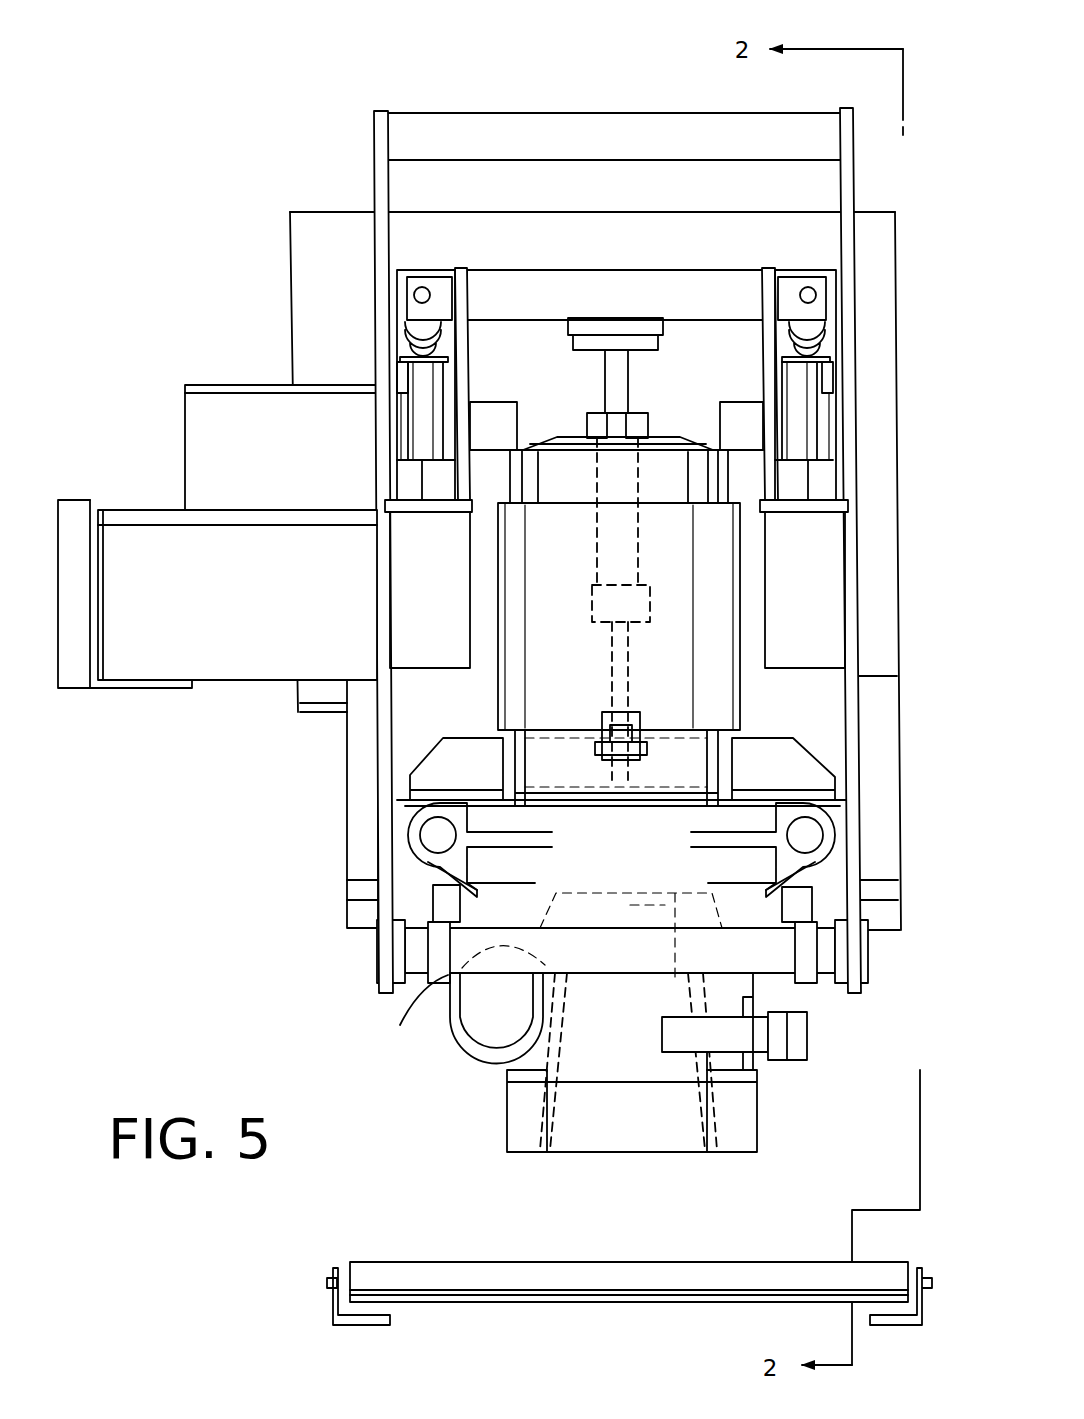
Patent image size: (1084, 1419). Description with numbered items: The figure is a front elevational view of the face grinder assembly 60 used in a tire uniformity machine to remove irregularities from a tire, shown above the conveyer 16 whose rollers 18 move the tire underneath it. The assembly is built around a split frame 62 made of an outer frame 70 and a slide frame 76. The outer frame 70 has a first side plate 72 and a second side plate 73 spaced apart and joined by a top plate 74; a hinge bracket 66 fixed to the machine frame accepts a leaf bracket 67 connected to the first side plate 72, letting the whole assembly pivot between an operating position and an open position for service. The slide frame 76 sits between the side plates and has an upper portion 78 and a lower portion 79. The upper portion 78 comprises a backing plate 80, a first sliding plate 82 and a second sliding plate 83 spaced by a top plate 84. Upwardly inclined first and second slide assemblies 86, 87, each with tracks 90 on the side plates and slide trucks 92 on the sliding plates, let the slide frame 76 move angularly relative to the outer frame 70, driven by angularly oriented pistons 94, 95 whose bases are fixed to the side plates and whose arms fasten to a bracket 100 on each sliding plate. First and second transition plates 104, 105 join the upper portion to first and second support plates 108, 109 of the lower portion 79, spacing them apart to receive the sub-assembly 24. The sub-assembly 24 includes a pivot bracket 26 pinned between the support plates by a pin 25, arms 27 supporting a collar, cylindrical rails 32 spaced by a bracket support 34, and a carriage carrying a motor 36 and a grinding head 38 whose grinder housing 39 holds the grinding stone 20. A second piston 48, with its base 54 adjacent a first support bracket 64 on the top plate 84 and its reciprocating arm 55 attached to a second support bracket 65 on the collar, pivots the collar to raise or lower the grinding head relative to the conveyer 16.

The conveyer 16 is at (455, 1250).
The rollers 18 is at (530, 1268).
The grinding stone 20 is at (643, 1067).
The sub-assembly 24 is at (655, 790).
The pin 25 is at (385, 942).
The pivot bracket 26 is at (440, 960).
The arms 27 is at (440, 907).
The cylindrical rails 32 is at (438, 835).
The bracket support 34 is at (425, 855).
The motor 36 is at (635, 623).
The grinding head 38 is at (614, 1160).
The grinder housing 39 is at (745, 1128).
The second piston 48 is at (598, 556).
The base 54 is at (606, 516).
The reciprocating arm 55 is at (620, 660).
The face grinder assembly 60 is at (315, 890).
The split frame 62 is at (568, 103).
The first support bracket 64 is at (640, 337).
The second support bracket 65 is at (605, 790).
The hinge bracket 66 is at (80, 505).
The leaf bracket 67 is at (140, 525).
The outer frame 70 is at (862, 375).
The first side plate 72 is at (383, 170).
The second side plate 73 is at (847, 196).
The top plate 74 is at (455, 116).
The slide frame 76 is at (378, 768).
The upper portion 78 is at (453, 266).
The lower portion 79 is at (378, 703).
The backing plate 80 is at (716, 345).
The first sliding plate 82 is at (462, 478).
The second sliding plate 83 is at (775, 500).
The top plate 84 is at (533, 283).
The first slide assembly 86 is at (416, 489).
The second slide assembly 87 is at (827, 489).
The tracks 90 is at (400, 415).
The slide trucks 92 is at (435, 462).
The piston 94 is at (406, 332).
The piston 95 is at (832, 345).
The bracket 100 is at (405, 290).
The first transition plate 104 is at (412, 647).
The second transition plate 105 is at (830, 632).
The first support plate 108 is at (410, 790).
The second support plate 109 is at (855, 778).